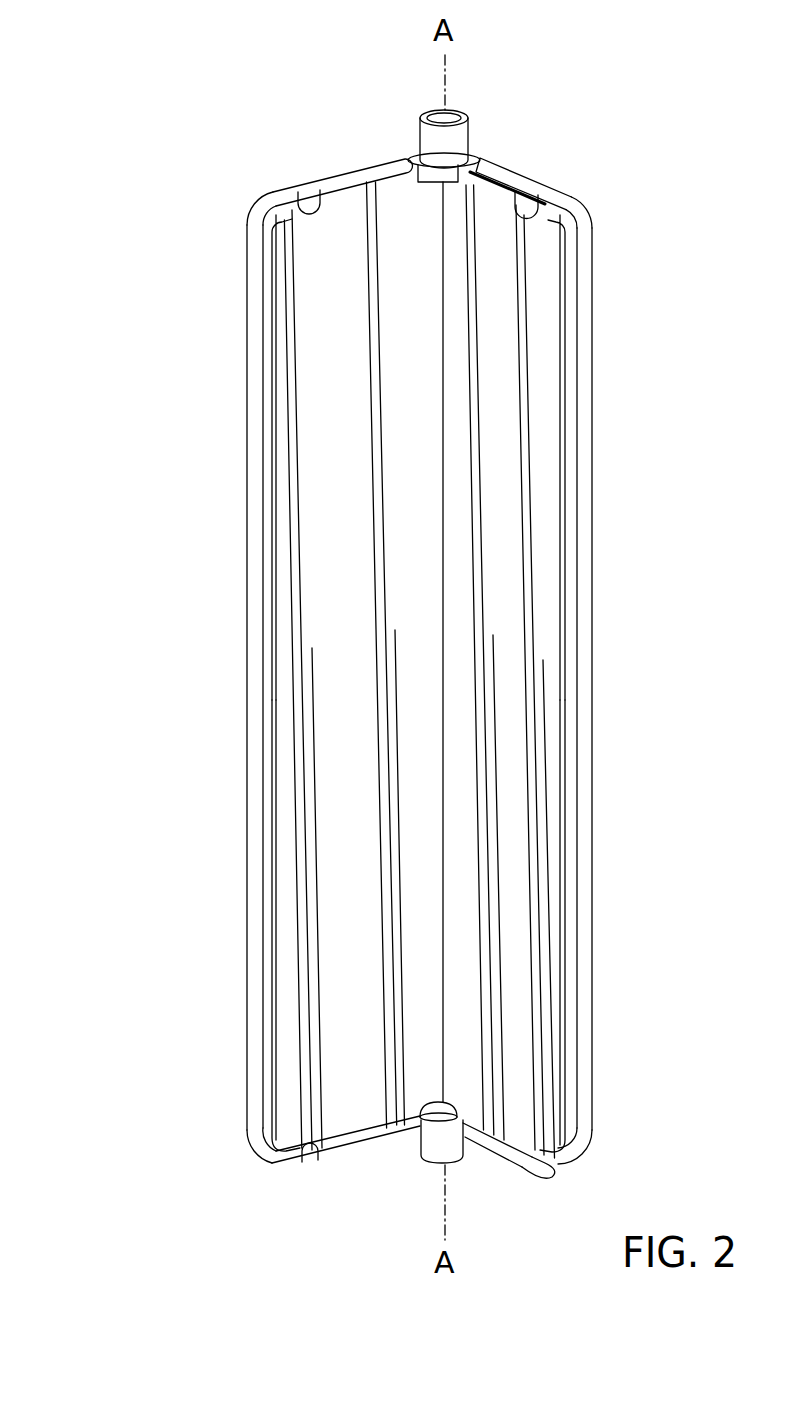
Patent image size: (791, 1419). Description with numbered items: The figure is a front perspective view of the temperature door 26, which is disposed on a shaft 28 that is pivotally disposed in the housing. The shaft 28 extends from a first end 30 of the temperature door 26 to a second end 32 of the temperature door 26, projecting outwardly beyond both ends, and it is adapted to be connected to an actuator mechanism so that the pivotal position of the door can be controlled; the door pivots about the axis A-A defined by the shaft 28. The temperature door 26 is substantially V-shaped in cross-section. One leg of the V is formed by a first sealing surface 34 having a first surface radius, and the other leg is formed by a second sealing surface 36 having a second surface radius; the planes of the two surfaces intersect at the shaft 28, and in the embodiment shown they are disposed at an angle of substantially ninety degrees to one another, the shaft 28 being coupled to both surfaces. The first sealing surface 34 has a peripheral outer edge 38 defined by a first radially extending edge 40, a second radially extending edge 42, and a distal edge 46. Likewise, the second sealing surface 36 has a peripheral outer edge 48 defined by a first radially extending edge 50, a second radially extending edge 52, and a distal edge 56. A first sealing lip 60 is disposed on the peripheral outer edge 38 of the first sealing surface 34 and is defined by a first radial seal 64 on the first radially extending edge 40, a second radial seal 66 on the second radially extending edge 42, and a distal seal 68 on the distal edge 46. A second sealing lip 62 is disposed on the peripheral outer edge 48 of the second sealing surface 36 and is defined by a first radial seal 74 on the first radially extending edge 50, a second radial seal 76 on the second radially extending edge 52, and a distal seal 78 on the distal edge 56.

The temperature door 26 is at (104, 66).
The shaft 28 is at (458, 112).
The first end 30 is at (395, 153).
The second end 32 is at (333, 1163).
The first sealing surface 34 is at (287, 262).
The second sealing surface 36 is at (548, 257).
The peripheral outer edge 38 is at (277, 973).
The first radially extending edge 40 is at (310, 192).
The second radially extending edge 42 is at (317, 1163).
The distal edge 46 is at (277, 595).
The peripheral outer edge 48 is at (558, 955).
The first radially extending edge 50 is at (518, 192).
The second radially extending edge 52 is at (527, 1174).
The distal edge 56 is at (570, 668).
The first sealing lip 60 is at (268, 172).
The second sealing lip 62 is at (582, 195).
The first radial seal 64 is at (345, 166).
The second radial seal 66 is at (383, 1150).
The distal seal 68 is at (247, 392).
The first radial seal 74 is at (505, 162).
The second radial seal 76 is at (493, 1157).
The distal seal 78 is at (590, 385).